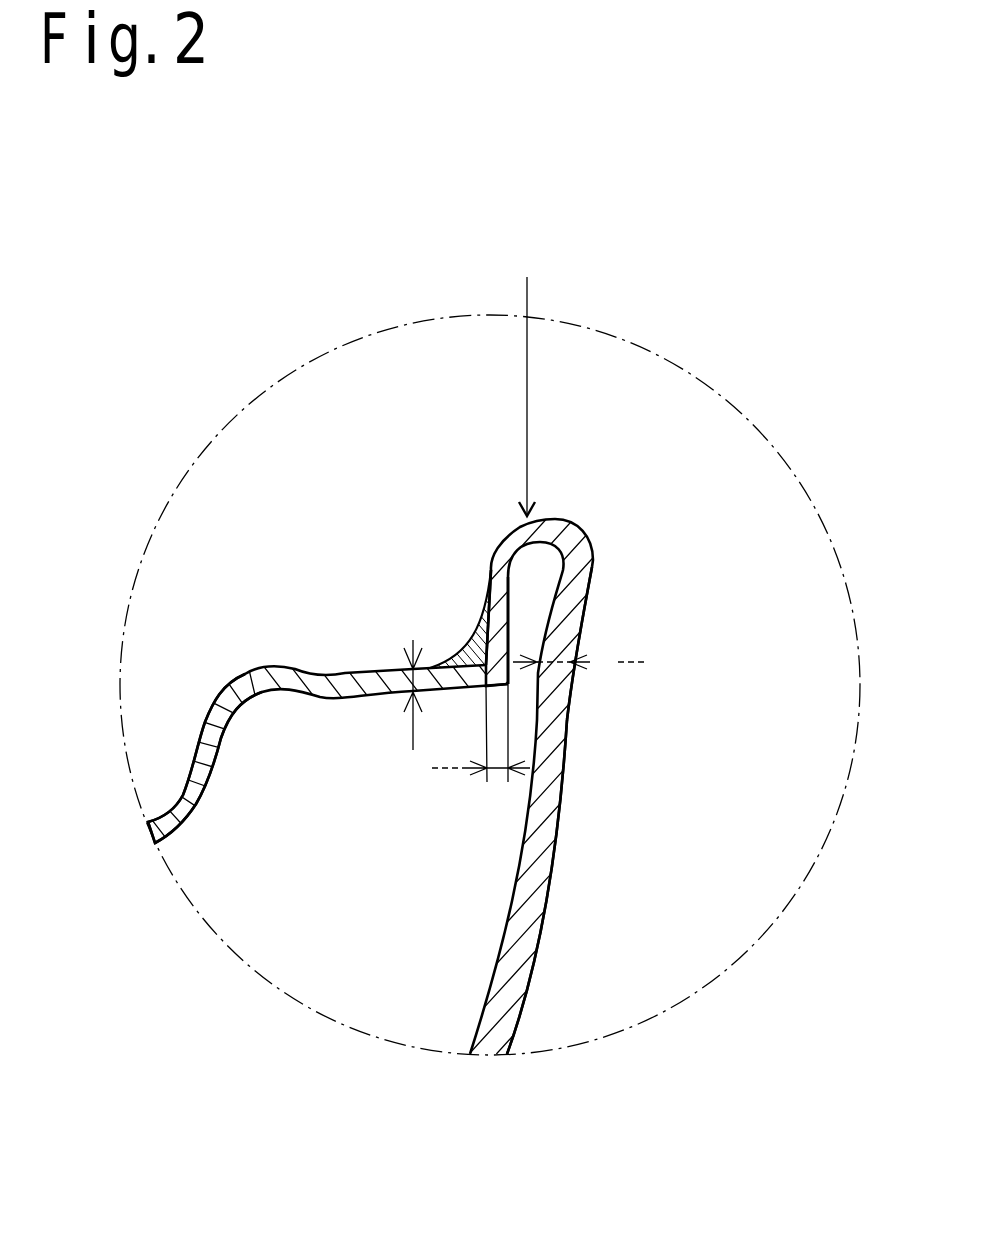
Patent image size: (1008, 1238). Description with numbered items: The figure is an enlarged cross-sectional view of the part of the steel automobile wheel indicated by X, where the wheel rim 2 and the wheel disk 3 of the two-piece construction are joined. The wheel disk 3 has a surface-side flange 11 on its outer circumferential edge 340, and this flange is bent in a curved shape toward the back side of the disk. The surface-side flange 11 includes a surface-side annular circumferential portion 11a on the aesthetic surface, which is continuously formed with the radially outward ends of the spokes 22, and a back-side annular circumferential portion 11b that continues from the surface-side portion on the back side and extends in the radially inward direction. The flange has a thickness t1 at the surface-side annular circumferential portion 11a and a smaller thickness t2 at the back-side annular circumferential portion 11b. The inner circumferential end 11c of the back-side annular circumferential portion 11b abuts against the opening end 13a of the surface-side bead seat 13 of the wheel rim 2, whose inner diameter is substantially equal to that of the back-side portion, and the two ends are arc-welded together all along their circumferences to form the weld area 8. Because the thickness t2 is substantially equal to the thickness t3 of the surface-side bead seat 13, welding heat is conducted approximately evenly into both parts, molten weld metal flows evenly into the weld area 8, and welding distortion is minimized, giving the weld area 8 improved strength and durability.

The wheel rim 2 is at (218, 698).
The wheel disk 3 is at (565, 777).
The weld area 8 is at (471, 640).
The surface-side flange 11 is at (563, 534).
The surface-side annular circumferential portion 11a is at (559, 626).
The back-side annular circumferential portion 11b is at (494, 595).
The inner circumferential end 11c is at (505, 670).
The surface-side bead seat 13 is at (368, 688).
The opening end 13a is at (477, 652).
The spokes 22 is at (530, 918).
The outer circumferential edge 340 is at (527, 277).
The enlarged part X is at (240, 410).
The thickness t1 is at (580, 648).
The thickness t2 is at (481, 733).
The thickness t3 is at (398, 695).